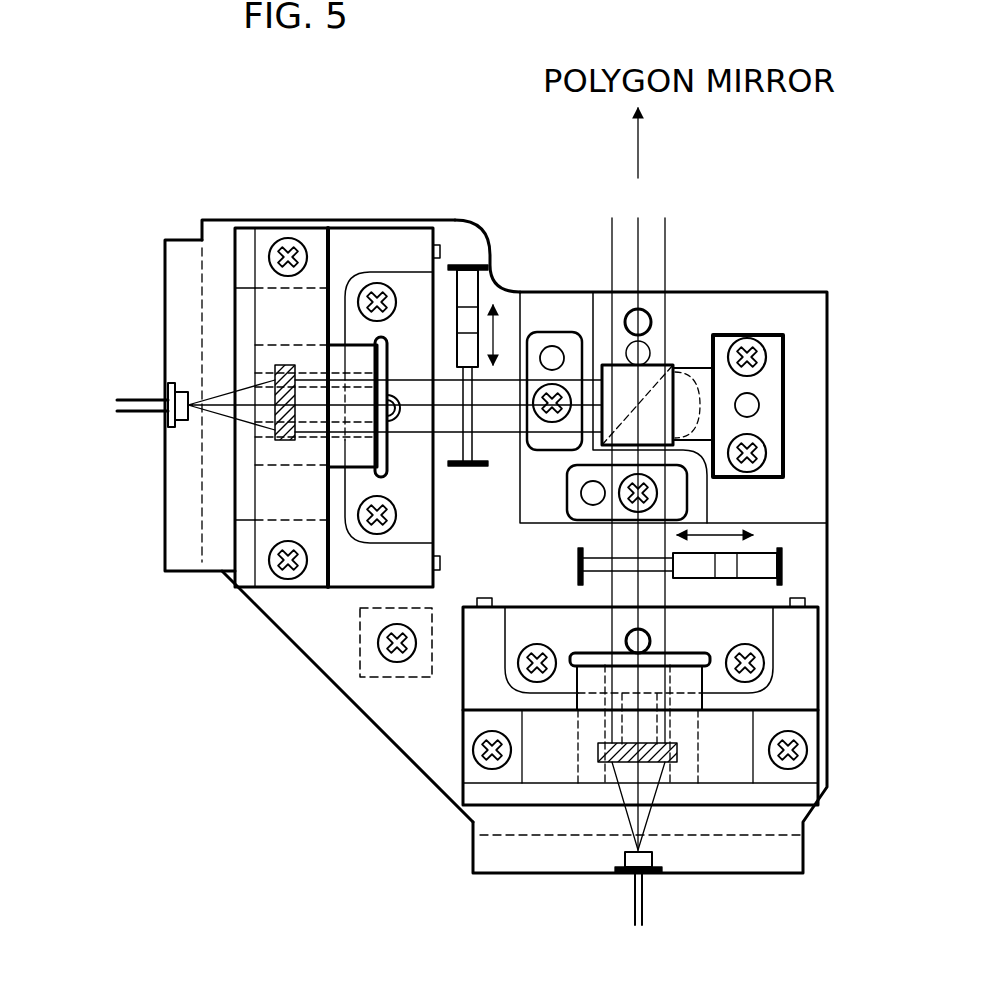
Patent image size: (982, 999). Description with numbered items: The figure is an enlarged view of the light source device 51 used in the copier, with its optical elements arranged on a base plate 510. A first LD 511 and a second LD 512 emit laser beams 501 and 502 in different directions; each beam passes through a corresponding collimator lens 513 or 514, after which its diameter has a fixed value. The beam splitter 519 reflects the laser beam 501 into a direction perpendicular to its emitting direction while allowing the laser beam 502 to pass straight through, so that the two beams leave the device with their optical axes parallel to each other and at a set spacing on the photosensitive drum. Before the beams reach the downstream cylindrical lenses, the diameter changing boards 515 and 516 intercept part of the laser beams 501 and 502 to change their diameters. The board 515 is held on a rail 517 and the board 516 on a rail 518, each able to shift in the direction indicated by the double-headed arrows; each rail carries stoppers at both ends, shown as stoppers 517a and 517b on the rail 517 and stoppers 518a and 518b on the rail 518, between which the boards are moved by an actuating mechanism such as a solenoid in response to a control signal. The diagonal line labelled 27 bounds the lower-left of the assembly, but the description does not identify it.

The optical housing wall 27 is at (385, 708).
The light source device 51 is at (146, 293).
The laser beam 501 is at (420, 387).
The laser beam 502 is at (657, 623).
The base plate 510 is at (803, 308).
The first LD 511 is at (181, 424).
The second LD 512 is at (653, 860).
The collimator lens 513 is at (287, 443).
The collimator lens 514 is at (672, 750).
The diameter changing board 515 is at (481, 291).
The diameter changing board 516 is at (763, 545).
The rail 517 is at (482, 470).
The stopper 517a is at (455, 266).
The stopper 517b is at (462, 466).
The rail 518 is at (595, 577).
The stopper 518a is at (782, 568).
The stopper 518b is at (577, 565).
The beam splitter 519 is at (653, 380).